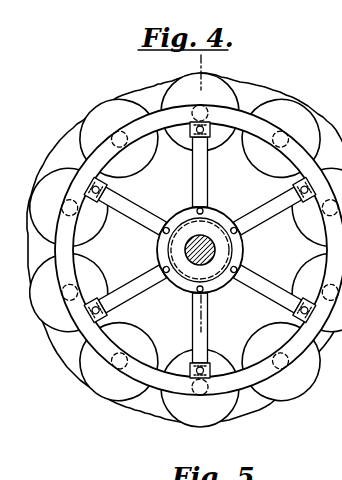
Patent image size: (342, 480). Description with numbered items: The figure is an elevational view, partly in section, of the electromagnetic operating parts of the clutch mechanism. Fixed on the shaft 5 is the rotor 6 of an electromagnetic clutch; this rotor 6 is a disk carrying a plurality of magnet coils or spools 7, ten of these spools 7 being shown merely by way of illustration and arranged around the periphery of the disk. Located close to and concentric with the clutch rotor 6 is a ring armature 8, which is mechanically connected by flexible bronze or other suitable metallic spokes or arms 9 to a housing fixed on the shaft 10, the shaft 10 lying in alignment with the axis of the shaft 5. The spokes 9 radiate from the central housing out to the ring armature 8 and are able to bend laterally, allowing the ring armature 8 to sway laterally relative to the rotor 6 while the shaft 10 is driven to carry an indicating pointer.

The shaft 5 is at (230, 67).
The rotor 6 is at (254, 100).
The magnet coils or spools 7 is at (166, 166).
The ring armature 8 is at (270, 326).
The spokes or arms 9 is at (158, 249).
The shaft 10 is at (215, 249).